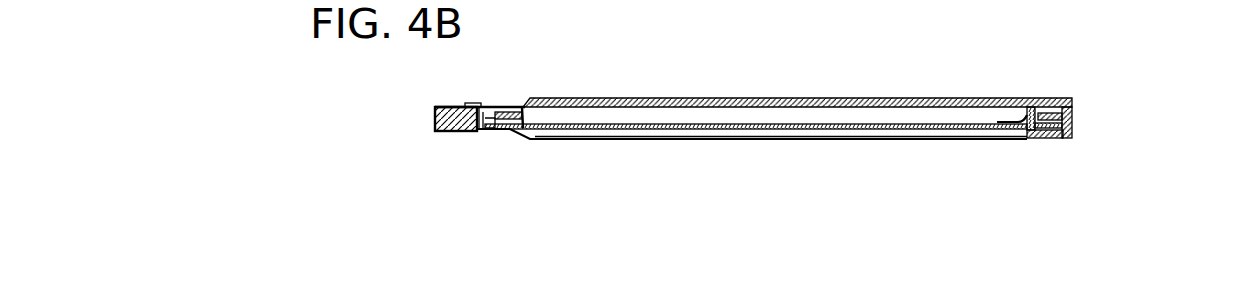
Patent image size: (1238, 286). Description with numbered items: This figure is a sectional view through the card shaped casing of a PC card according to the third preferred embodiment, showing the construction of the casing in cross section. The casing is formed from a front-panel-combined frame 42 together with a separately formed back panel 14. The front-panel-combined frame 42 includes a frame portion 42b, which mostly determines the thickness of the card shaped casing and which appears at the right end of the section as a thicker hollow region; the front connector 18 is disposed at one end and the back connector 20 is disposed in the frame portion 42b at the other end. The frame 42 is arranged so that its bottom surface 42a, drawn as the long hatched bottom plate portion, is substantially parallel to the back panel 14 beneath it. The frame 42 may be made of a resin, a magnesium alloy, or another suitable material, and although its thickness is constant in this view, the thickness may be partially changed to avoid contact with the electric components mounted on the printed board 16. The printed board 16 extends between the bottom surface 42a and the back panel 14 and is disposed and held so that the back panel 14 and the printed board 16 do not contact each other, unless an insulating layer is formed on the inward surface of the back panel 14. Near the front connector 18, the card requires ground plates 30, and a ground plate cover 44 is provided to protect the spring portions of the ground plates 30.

The back panel 14 is at (703, 141).
The printed board 16 is at (825, 137).
The front connector 18 is at (435, 122).
The back connector 20 is at (1030, 139).
The ground plate 30 is at (472, 102).
The front-panel-combined frame 42 is at (877, 86).
The bottom surface 42a is at (853, 97).
The frame portion 42b is at (1075, 132).
The ground plate cover 44 is at (504, 100).